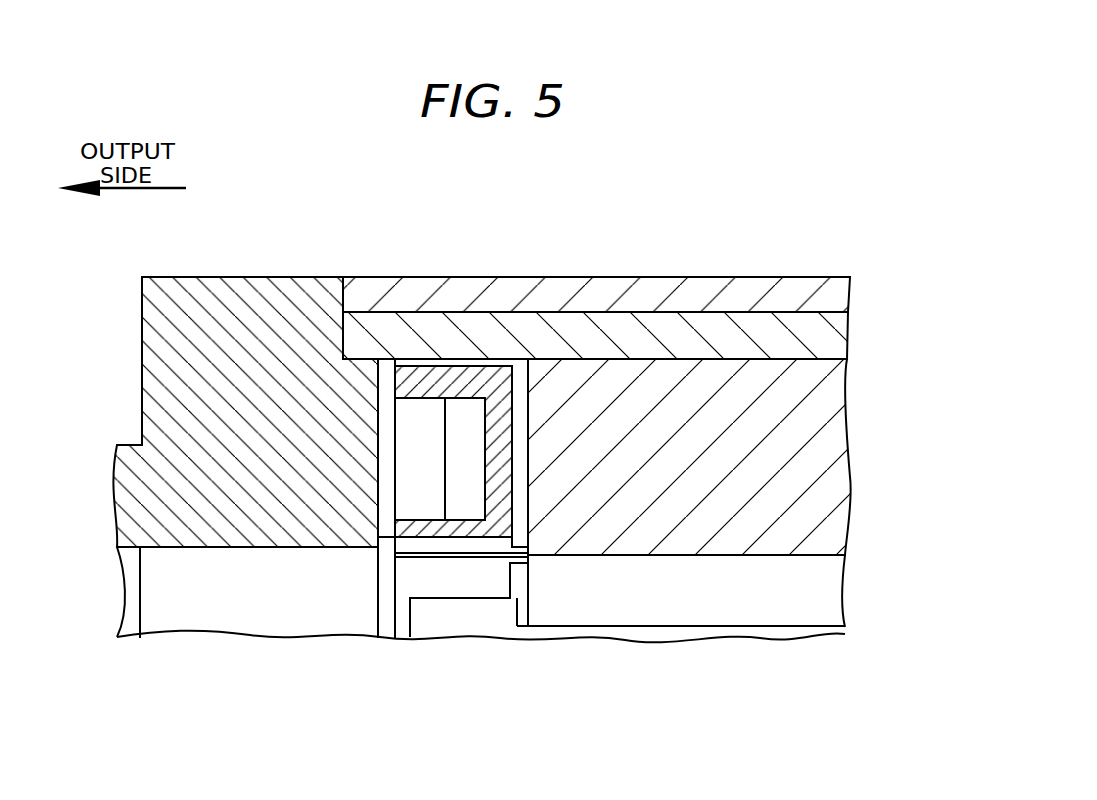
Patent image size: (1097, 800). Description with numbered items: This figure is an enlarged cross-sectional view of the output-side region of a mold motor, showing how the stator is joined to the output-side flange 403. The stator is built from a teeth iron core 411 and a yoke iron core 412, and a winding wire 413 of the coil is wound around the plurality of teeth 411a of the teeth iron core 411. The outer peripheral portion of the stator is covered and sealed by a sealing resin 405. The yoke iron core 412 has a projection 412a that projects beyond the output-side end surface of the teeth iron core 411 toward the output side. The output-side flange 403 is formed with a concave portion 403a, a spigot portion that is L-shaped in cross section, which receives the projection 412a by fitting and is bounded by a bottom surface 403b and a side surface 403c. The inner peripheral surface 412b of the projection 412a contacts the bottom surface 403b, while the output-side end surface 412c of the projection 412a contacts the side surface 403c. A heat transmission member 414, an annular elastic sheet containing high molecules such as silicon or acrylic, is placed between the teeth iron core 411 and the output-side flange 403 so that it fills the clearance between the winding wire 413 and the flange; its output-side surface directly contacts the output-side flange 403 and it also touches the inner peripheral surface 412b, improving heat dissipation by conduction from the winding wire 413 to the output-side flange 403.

The output-side flange 403 is at (212, 307).
The concave portion 403a is at (360, 328).
The bottom surface 403b is at (360, 358).
The side surface 403c is at (343, 313).
The sealing resin 405 is at (539, 297).
The teeth iron core 411 is at (818, 452).
The teeth 411a is at (633, 487).
The yoke iron core 412 is at (818, 338).
The projection 412a is at (370, 360).
The inner peripheral surface 412b is at (398, 314).
The output-side end surface 412c is at (363, 345).
The winding wire 413 is at (462, 477).
The heat transmission member 414 is at (387, 472).